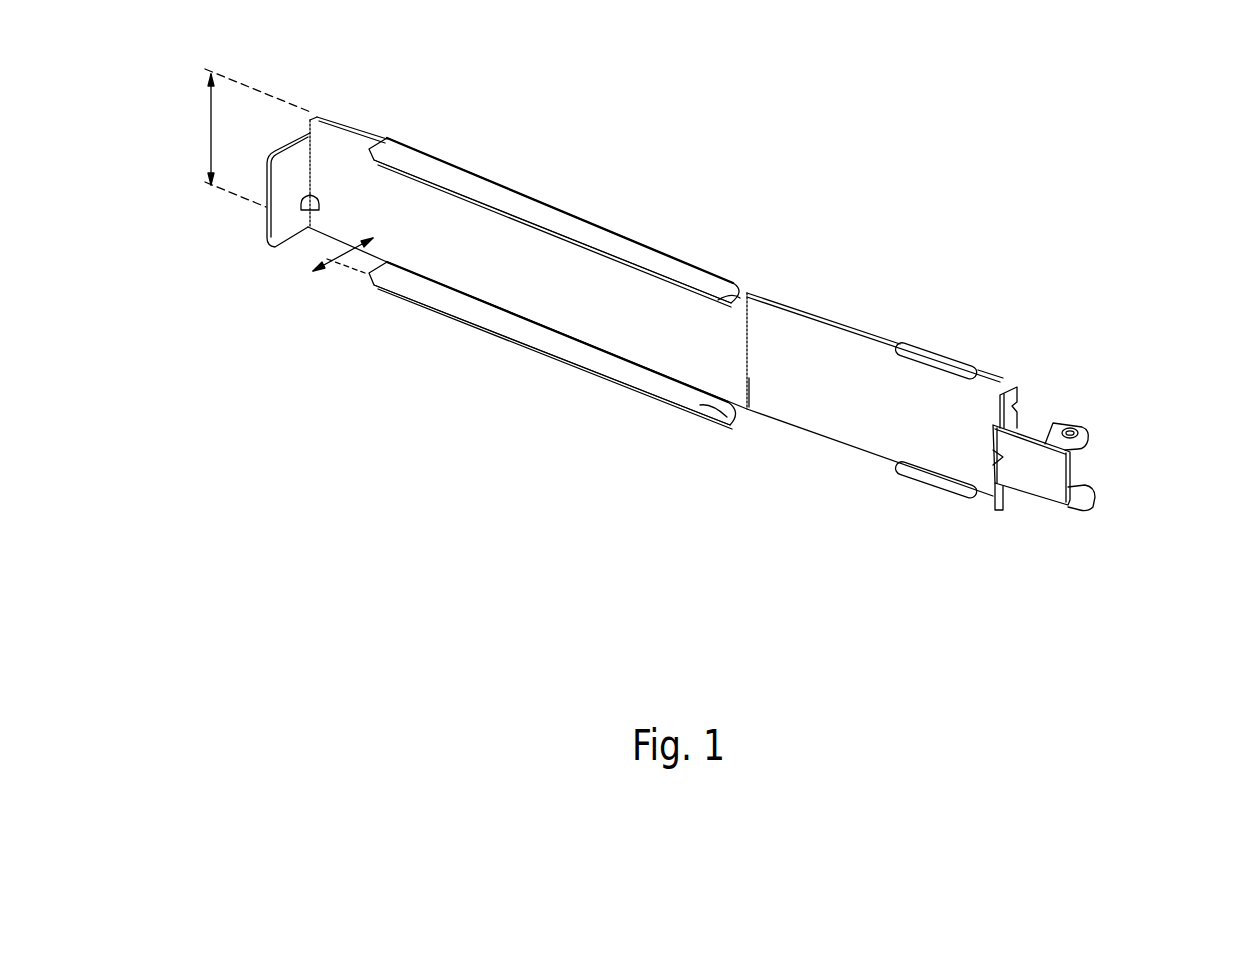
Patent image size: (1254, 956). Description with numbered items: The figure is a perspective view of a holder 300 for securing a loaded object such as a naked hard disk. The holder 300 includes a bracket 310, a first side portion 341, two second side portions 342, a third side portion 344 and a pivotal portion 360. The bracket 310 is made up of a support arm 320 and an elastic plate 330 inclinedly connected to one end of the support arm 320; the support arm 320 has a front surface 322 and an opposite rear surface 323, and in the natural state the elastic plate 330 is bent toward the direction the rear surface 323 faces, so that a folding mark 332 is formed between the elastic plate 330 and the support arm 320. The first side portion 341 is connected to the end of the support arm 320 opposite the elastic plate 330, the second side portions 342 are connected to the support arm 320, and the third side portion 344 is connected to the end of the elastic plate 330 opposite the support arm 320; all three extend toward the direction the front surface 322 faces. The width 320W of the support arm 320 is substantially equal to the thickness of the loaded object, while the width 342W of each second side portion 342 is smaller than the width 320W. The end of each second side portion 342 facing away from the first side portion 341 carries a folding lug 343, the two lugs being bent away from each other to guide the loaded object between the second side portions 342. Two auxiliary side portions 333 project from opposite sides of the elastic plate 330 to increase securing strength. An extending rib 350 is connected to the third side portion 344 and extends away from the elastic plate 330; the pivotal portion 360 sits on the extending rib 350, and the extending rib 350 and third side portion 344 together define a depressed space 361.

The holder 300 is at (1100, 52).
The bracket 310 is at (910, 212).
The support arm 320 is at (748, 290).
The width of the support arm 320W is at (210, 134).
The front surface 322 is at (445, 262).
The rear surface 323 is at (358, 129).
The elastic plate 330 is at (827, 318).
The folding mark 332 is at (750, 377).
The auxiliary side portions 333 is at (913, 358).
The first side portion 341 is at (284, 223).
The second side portions 342 is at (633, 253).
The width of the second side portion 342W is at (310, 248).
The folding lug 343 is at (705, 292).
The third side portion 344 is at (1008, 393).
The extending rib 350 is at (1047, 479).
The pivotal portion 360 is at (1082, 490).
The depressed space 361 is at (1041, 414).